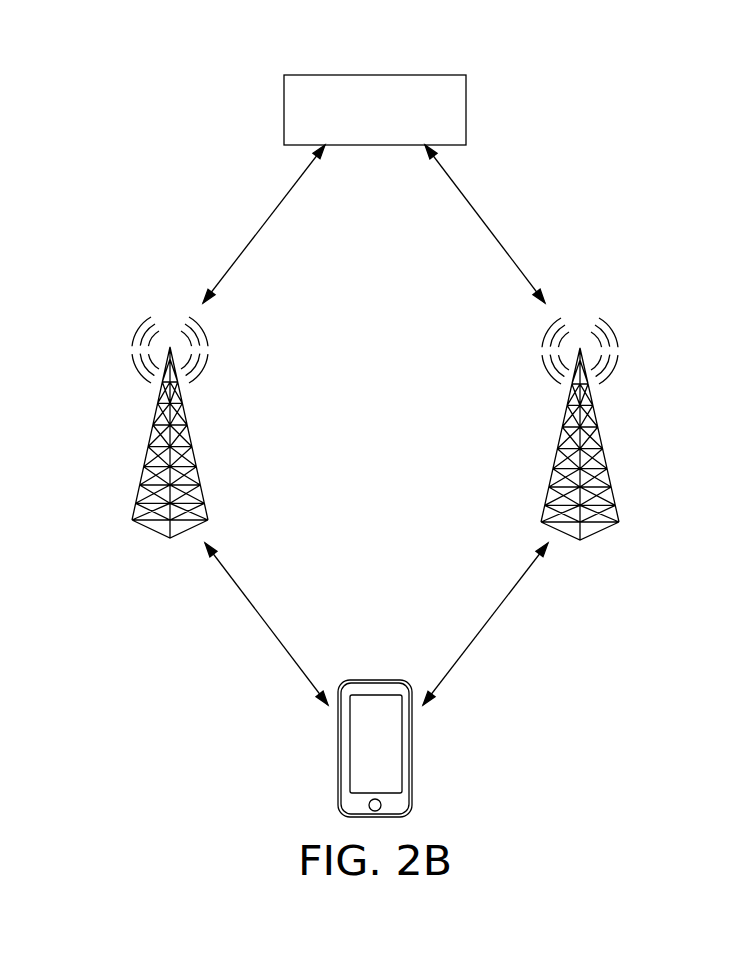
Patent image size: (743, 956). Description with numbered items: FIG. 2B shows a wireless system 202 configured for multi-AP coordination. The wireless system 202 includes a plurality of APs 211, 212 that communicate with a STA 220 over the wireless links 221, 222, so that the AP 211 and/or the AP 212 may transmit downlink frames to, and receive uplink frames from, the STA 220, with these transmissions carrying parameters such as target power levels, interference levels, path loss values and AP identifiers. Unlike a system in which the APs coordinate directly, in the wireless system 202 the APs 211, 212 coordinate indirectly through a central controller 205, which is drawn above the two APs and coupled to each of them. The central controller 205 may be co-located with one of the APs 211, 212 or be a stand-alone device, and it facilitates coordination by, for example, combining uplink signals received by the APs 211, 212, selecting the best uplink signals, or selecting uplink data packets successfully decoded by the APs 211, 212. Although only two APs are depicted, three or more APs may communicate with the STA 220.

The wireless system 202 is at (152, 49).
The central controller 205 is at (283, 107).
The AP 211 is at (153, 526).
The AP 212 is at (600, 533).
The STA 220 is at (377, 678).
The wireless link 221 is at (265, 625).
The wireless link 222 is at (487, 625).